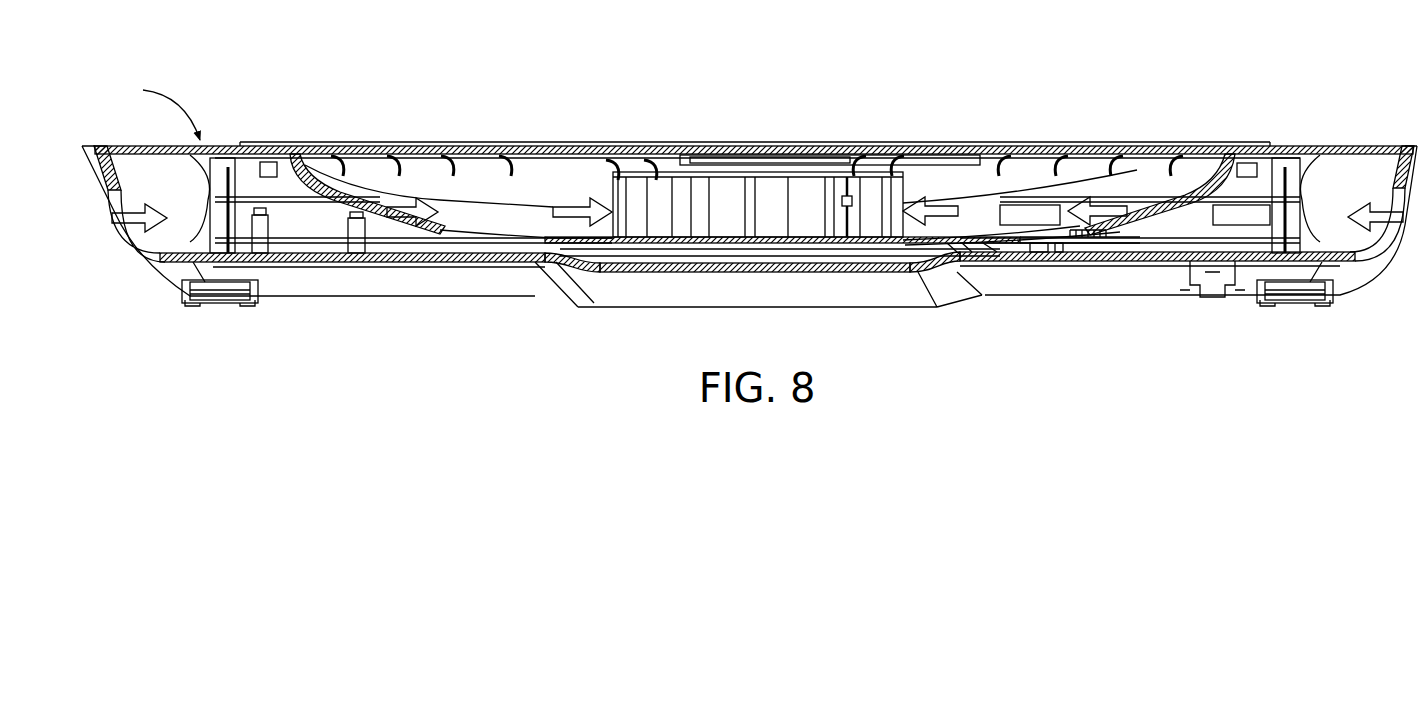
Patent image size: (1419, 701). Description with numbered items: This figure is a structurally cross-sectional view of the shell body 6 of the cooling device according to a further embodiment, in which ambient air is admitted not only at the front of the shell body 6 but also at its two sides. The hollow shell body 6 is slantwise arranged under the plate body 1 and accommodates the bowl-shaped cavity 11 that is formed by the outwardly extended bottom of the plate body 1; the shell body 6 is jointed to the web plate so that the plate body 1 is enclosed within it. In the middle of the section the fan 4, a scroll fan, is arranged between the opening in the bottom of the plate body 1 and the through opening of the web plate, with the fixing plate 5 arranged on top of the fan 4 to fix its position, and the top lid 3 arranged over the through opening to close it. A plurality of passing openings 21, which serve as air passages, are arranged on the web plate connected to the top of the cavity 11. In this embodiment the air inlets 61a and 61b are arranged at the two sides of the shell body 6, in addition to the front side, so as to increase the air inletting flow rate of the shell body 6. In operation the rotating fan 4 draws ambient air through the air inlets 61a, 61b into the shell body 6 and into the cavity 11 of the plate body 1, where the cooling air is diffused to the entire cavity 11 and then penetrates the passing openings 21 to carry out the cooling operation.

The plate body 1 is at (183, 163).
The top lid 3 is at (793, 146).
The fan 4 is at (615, 182).
The fixing plate 5 is at (732, 177).
The shell body 6 is at (348, 265).
The cavity 11 is at (480, 173).
The passing openings 21 is at (360, 150).
The air inlet 61a is at (143, 237).
The air inlet 61b is at (1367, 230).